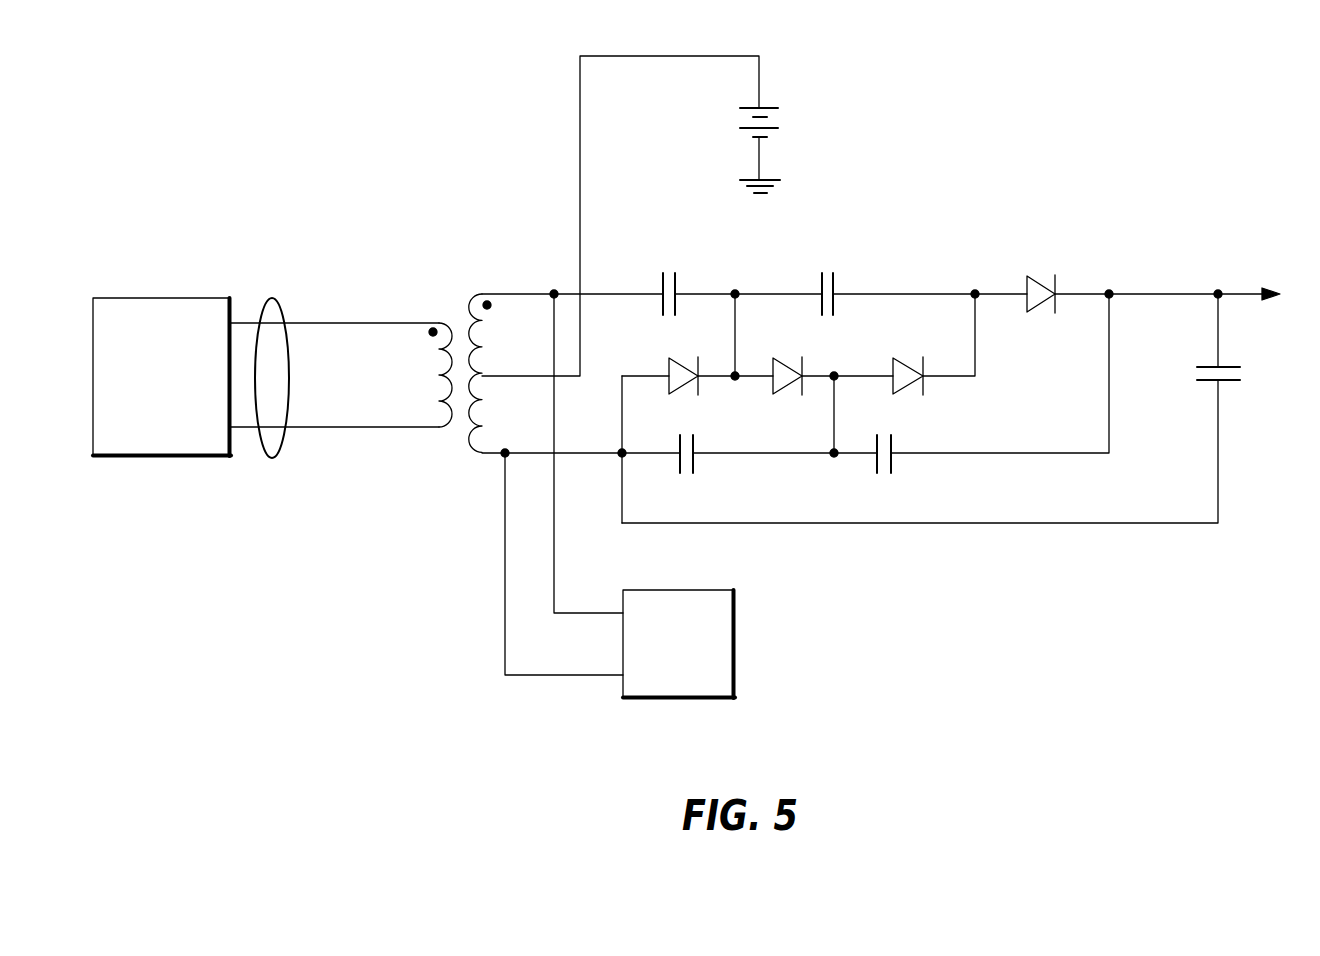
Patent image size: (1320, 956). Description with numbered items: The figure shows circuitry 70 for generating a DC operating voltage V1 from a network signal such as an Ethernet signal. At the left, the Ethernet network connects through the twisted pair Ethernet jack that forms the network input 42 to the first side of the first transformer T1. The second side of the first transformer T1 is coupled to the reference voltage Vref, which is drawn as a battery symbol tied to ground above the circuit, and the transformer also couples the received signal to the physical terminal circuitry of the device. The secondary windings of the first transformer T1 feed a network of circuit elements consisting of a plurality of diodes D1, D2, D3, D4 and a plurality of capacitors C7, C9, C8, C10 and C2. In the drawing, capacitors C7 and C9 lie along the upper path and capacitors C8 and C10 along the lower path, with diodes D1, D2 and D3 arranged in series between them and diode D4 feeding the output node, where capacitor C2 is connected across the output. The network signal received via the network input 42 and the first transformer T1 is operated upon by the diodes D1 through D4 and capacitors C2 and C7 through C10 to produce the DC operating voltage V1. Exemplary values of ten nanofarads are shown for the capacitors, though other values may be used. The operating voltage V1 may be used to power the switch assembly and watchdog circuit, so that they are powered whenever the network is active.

The network input 42 is at (285, 310).
The circuitry 70 is at (1033, 152).
The first transformer T1 is at (460, 389).
The reference voltage Vref is at (784, 135).
The capacitor C7 is at (688, 294).
The capacitor C9 is at (848, 294).
The capacitor C8 is at (709, 452).
The capacitor C10 is at (908, 452).
The capacitor C2 is at (1239, 382).
The diode D1 is at (683, 362).
The diode D2 is at (787, 362).
The diode D3 is at (908, 362).
The diode D4 is at (1041, 279).
The operating voltage V1 is at (1288, 295).